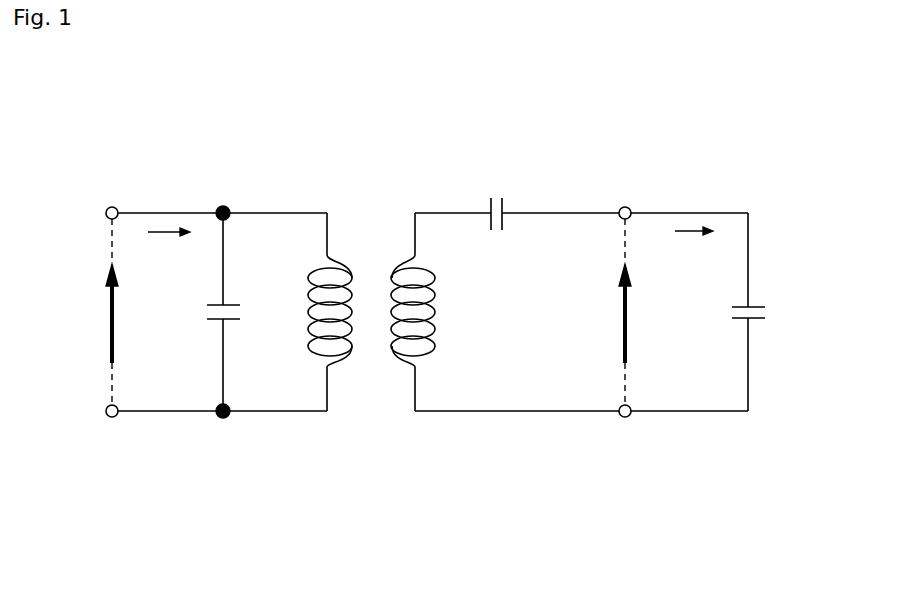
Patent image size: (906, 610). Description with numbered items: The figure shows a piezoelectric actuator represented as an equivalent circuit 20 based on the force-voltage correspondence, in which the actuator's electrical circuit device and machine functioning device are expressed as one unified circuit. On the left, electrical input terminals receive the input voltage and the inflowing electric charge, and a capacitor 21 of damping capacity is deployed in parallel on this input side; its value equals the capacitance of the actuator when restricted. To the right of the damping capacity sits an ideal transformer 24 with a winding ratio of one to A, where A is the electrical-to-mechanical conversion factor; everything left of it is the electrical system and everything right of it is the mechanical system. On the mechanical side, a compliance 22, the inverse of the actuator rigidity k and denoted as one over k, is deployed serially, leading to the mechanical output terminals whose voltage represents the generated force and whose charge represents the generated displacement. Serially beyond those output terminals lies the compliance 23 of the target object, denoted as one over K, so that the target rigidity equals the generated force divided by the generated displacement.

The equivalent circuit 20 is at (227, 146).
The capacitor 21 is at (236, 321).
The compliance 22 is at (504, 220).
The compliance 23 is at (758, 321).
The ideal transformer 24 is at (393, 362).